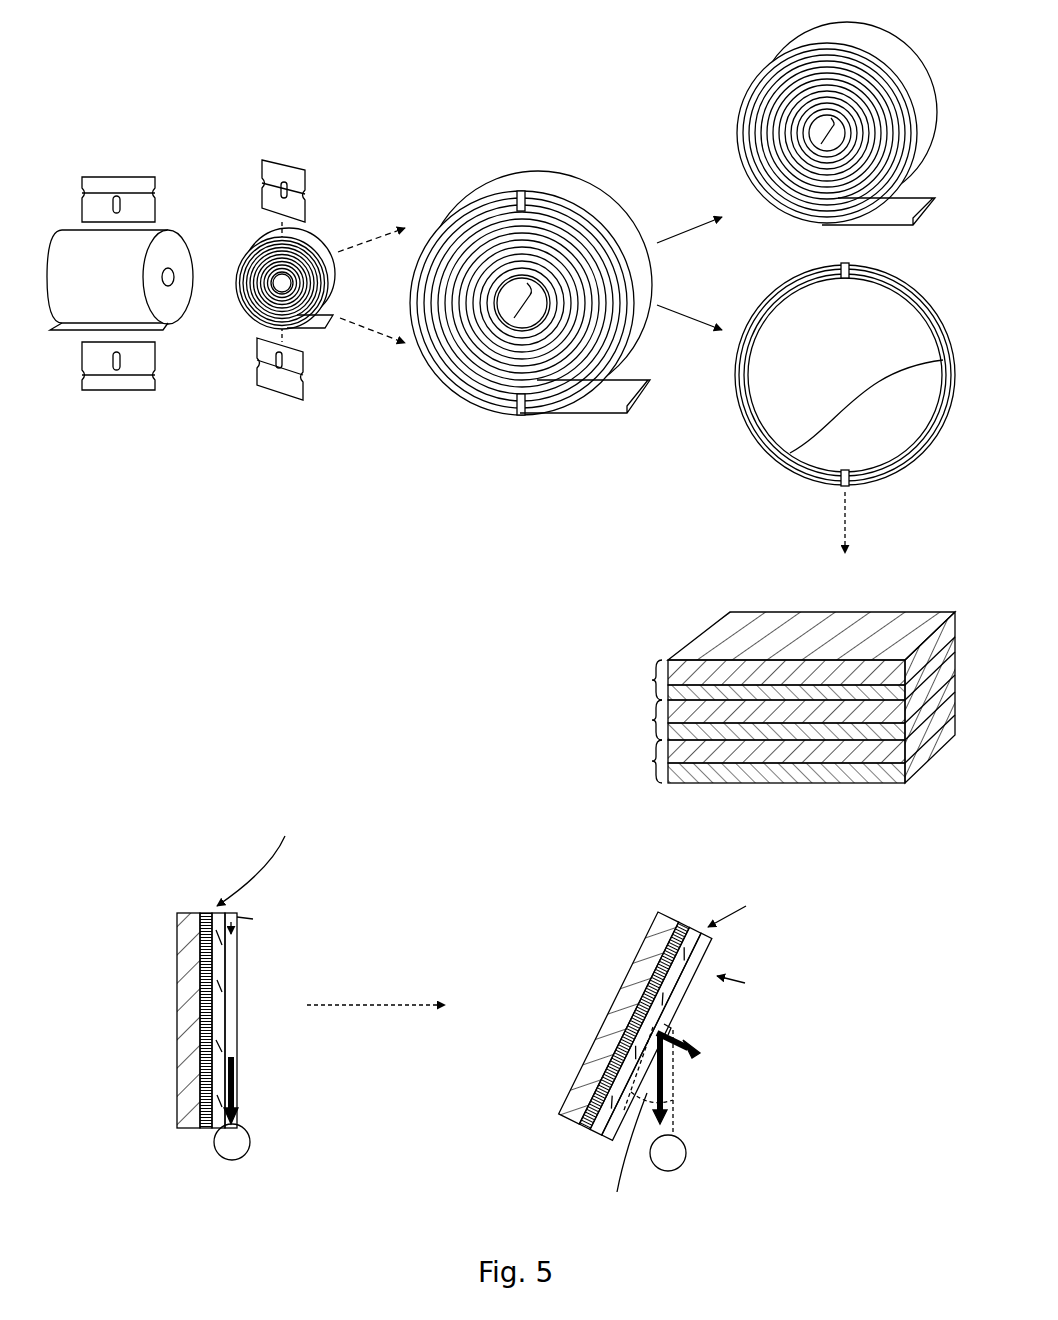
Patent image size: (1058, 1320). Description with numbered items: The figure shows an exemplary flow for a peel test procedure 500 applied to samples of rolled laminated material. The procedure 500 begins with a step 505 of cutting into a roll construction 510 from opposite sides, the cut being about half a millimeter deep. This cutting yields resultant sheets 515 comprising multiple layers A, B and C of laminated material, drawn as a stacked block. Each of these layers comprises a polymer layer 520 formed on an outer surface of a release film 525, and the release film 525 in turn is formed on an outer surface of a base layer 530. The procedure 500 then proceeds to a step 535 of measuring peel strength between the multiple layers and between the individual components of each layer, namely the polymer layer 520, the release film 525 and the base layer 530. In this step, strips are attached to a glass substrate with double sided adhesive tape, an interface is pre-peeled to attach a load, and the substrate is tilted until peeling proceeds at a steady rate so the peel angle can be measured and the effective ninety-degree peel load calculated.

The peel test procedure 500 is at (178, 108).
The step of cutting 505 is at (644, 218).
The roll construction 510 is at (312, 243).
The resultant sheets 515 is at (793, 463).
The polymer layer 520 is at (938, 668).
The release film 525 is at (867, 685).
The base layer 530 is at (790, 632).
The step of measuring peel strength 535 is at (738, 797).